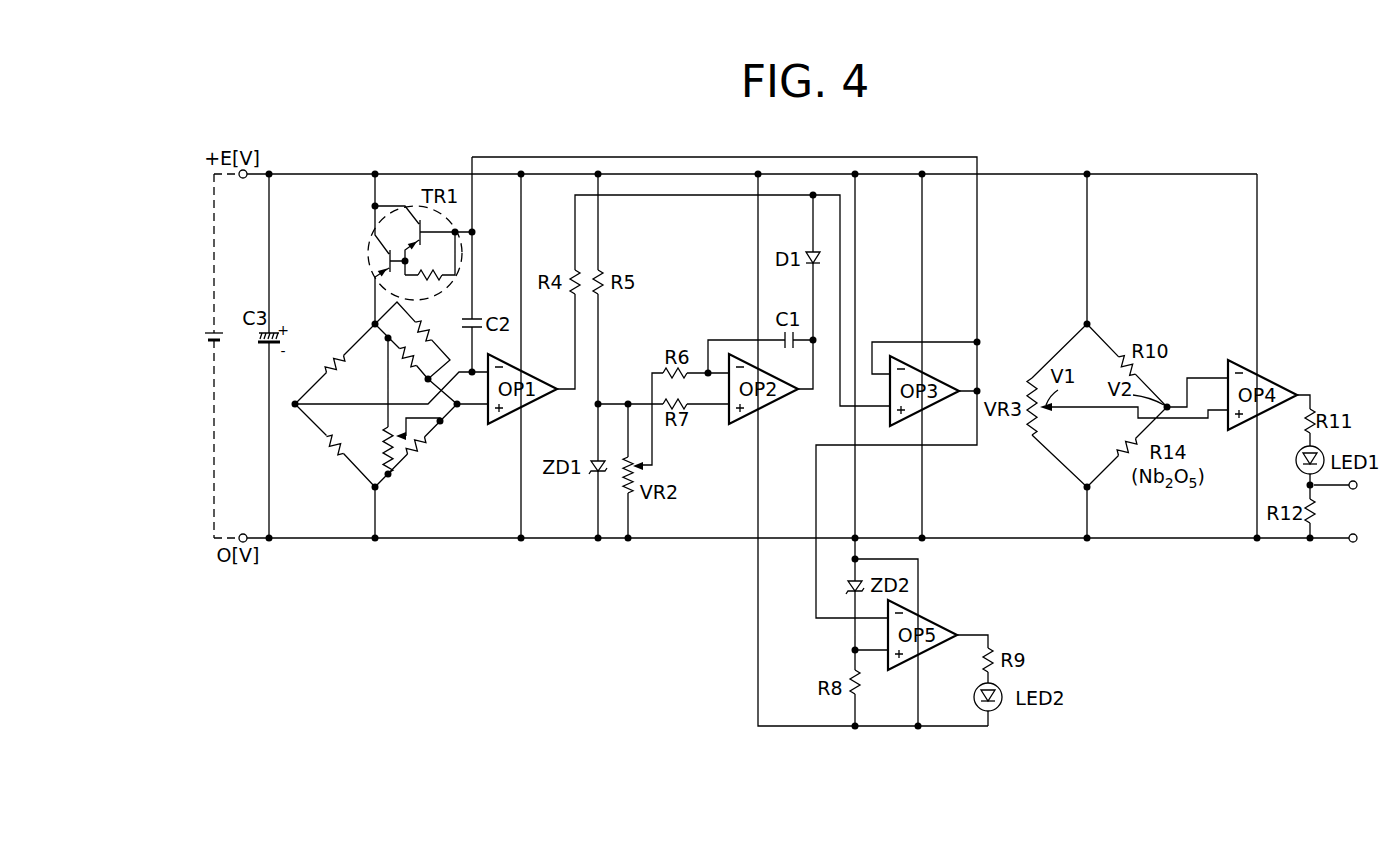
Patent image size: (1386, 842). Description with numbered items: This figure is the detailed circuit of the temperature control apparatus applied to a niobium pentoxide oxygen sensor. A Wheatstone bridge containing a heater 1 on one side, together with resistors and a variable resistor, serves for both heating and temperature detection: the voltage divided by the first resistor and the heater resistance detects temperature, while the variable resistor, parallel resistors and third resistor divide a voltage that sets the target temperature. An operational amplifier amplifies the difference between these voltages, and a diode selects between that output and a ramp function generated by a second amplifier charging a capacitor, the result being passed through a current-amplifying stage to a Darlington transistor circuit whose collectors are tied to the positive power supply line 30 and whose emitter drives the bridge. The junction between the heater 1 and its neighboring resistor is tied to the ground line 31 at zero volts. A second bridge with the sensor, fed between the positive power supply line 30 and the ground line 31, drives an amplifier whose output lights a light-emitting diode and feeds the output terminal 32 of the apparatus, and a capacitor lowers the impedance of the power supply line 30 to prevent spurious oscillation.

The heater 1 is at (312, 437).
The positive power supply line 30 is at (334, 172).
The ground line 31 is at (322, 540).
The output terminal 32 is at (1353, 490).